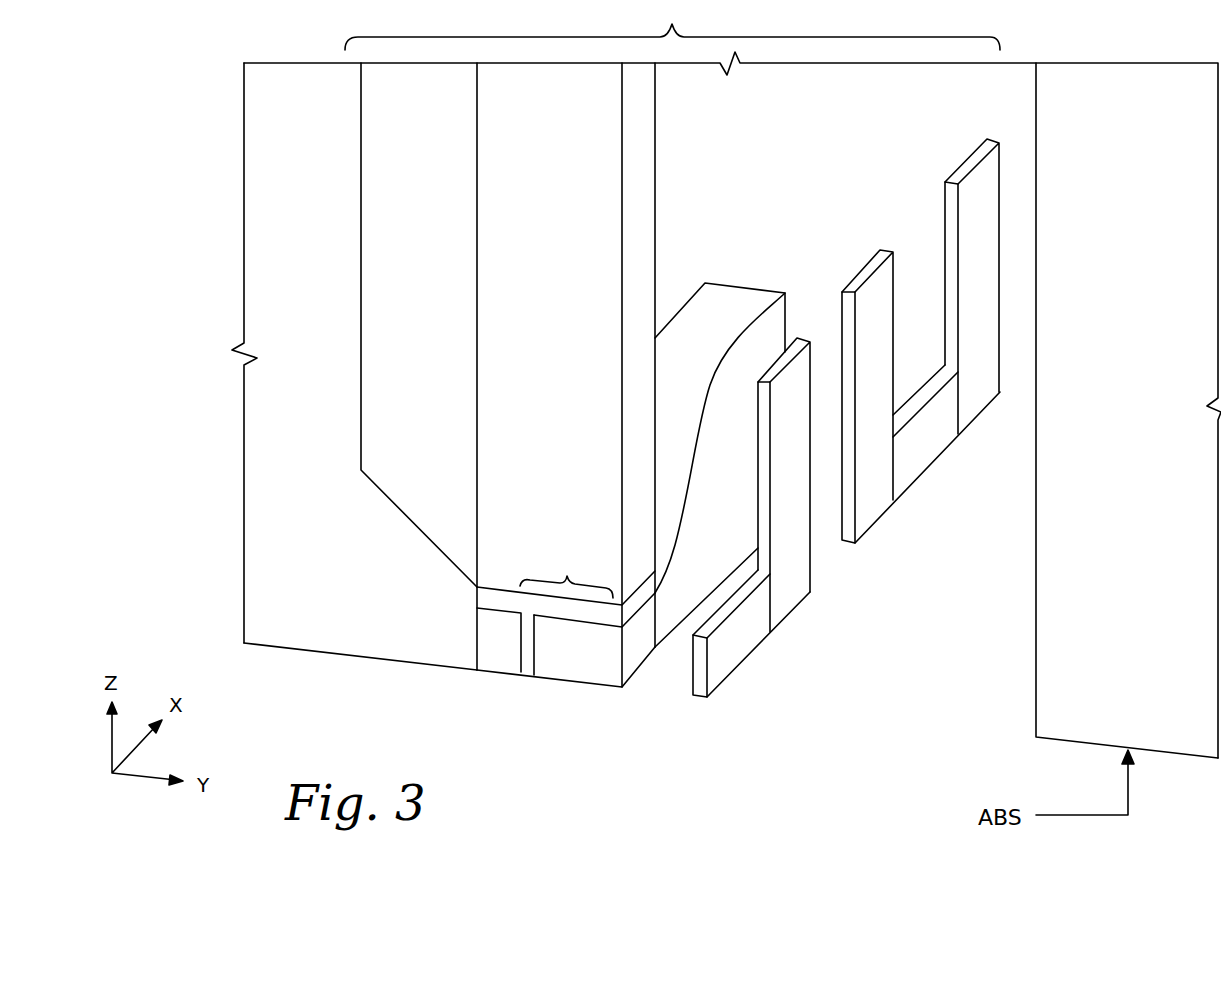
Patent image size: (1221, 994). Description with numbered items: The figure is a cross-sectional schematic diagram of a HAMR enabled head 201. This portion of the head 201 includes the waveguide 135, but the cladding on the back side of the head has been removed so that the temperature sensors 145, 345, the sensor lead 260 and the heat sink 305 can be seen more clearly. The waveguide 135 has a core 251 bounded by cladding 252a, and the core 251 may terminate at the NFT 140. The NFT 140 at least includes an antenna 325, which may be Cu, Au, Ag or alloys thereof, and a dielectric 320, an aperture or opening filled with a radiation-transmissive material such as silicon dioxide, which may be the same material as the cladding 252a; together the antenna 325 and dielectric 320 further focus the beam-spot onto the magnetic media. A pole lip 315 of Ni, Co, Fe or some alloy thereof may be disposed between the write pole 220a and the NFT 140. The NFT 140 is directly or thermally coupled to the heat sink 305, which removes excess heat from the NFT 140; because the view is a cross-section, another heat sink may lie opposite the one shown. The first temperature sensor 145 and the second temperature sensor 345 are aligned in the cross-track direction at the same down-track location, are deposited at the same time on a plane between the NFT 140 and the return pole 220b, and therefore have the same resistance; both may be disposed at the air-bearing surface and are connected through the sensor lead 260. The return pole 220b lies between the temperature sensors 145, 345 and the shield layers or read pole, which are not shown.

The HAMR enabled head 201 is at (210, 97).
The waveguide 135 is at (672, 25).
The write pole 220a is at (382, 595).
The cladding 252a is at (442, 251).
The core 251 is at (568, 258).
The antenna 325 is at (595, 690).
The pole lip 315 is at (487, 676).
The dielectric 320 is at (527, 677).
The NFT 140 is at (566, 571).
The heat sink 305 is at (741, 282).
The sensor lead 260 is at (795, 602).
The first temperature sensor 145 is at (737, 670).
The second temperature sensor 345 is at (922, 477).
The return pole 220b is at (1155, 353).